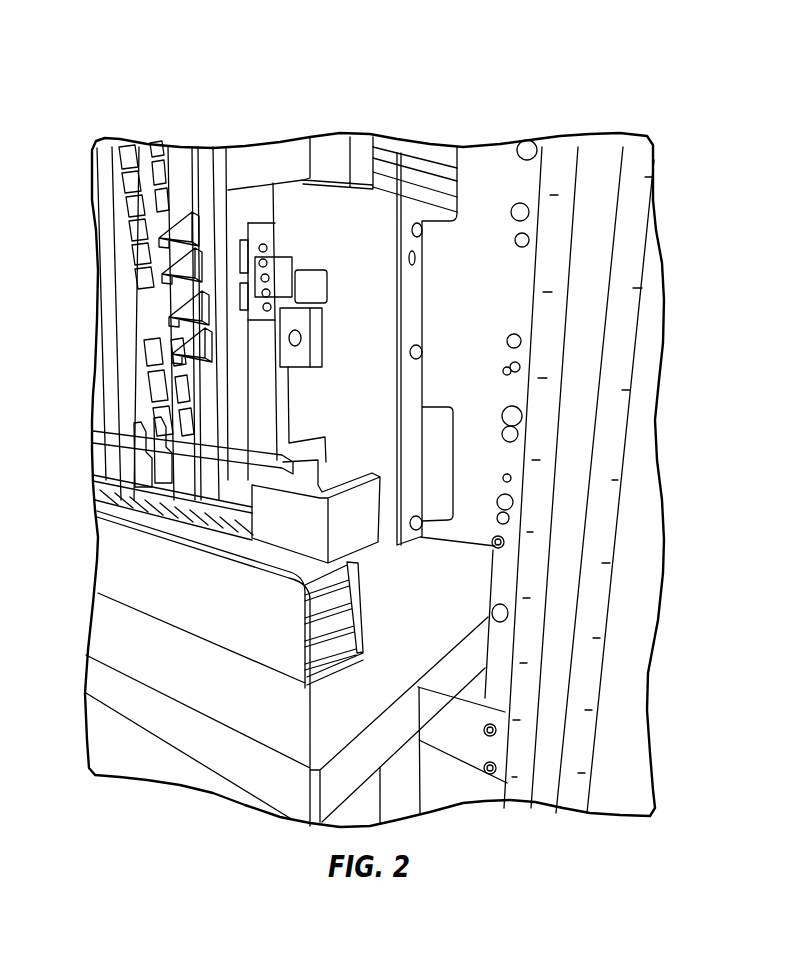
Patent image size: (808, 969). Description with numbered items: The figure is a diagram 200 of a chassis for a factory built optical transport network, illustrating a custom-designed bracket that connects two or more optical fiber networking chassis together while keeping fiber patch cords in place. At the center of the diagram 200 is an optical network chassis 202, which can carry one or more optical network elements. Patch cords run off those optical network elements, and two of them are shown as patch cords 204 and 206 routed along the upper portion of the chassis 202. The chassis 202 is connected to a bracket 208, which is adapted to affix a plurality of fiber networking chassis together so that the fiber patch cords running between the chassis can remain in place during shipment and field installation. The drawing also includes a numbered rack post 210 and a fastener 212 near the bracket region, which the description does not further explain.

The diagram 200 is at (662, 112).
The optical network chassis 202 is at (198, 150).
The patch cord 204 is at (380, 218).
The patch cord 206 is at (383, 192).
The bracket 208 is at (527, 148).
The rack post 210 is at (648, 323).
The screw 212 is at (505, 542).